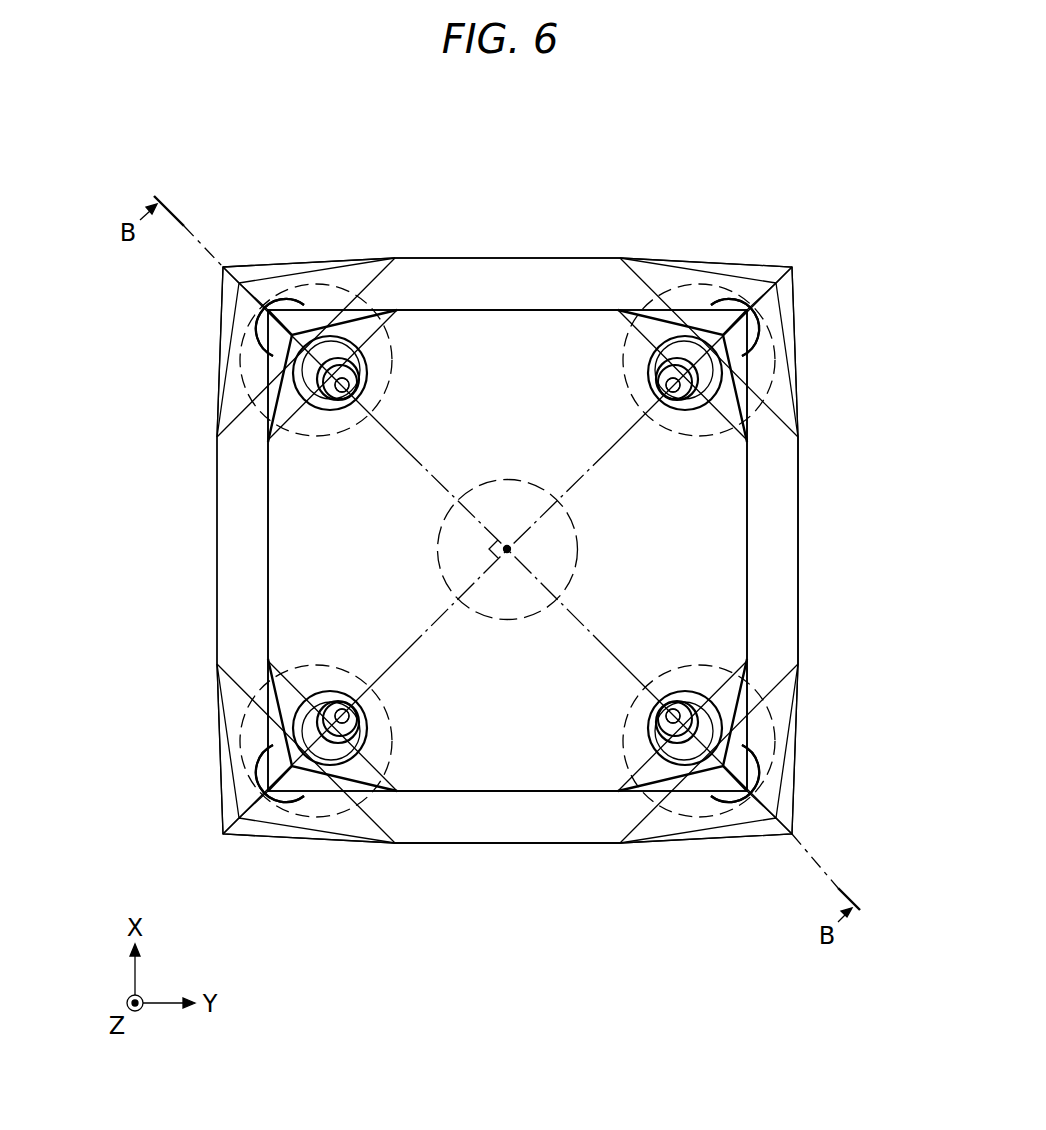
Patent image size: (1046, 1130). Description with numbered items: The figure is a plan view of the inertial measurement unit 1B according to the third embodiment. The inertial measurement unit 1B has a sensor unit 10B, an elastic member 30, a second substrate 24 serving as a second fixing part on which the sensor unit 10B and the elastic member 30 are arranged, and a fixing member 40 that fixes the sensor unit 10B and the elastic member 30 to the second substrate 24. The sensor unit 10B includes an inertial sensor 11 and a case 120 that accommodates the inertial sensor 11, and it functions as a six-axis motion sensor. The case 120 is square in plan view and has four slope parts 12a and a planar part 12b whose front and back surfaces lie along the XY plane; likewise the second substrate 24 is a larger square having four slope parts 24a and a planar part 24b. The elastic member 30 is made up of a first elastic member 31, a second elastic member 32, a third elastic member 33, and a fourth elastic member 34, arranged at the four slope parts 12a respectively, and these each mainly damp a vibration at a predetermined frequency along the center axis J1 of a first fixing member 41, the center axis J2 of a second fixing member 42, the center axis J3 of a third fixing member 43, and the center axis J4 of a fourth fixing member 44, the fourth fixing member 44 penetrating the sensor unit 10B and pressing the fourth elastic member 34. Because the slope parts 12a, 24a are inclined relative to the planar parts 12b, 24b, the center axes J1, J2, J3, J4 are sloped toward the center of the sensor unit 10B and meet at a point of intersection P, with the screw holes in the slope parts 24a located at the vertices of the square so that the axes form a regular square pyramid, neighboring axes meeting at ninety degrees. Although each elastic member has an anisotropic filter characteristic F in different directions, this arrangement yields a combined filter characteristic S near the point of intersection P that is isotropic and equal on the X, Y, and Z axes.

The inertial measurement unit 1B is at (829, 200).
The sensor unit 10B is at (896, 502).
The inertial sensor 11 is at (735, 514).
The case 120 is at (717, 573).
The slope parts 12a is at (360, 310).
The planar part 12b is at (551, 770).
The second substrate 24 is at (896, 613).
The slope parts 24a is at (237, 359).
The planar part 24b is at (784, 624).
The elastic member 30 is at (270, 196).
The first elastic member 31 is at (328, 345).
The second elastic member 32 is at (687, 345).
The third elastic member 33 is at (335, 772).
The fourth elastic member 34 is at (680, 772).
The fixing member 40 is at (124, 383).
The first fixing member 41 is at (318, 385).
The second fixing member 42 is at (697, 385).
The third fixing member 43 is at (318, 716).
The fourth fixing member 44 is at (697, 717).
The anisotropic filter characteristic F is at (326, 438).
The combined filter characteristic S is at (480, 481).
The point of intersection P is at (512, 548).
The center axis J1 is at (419, 433).
The center axis J2 is at (622, 432).
The center axis J3 is at (416, 666).
The center axis J4 is at (598, 666).